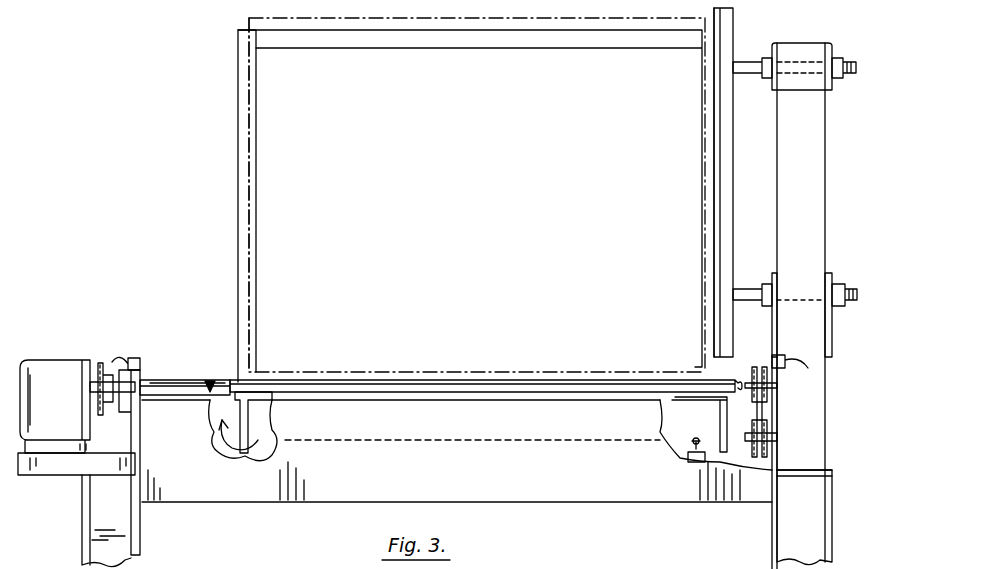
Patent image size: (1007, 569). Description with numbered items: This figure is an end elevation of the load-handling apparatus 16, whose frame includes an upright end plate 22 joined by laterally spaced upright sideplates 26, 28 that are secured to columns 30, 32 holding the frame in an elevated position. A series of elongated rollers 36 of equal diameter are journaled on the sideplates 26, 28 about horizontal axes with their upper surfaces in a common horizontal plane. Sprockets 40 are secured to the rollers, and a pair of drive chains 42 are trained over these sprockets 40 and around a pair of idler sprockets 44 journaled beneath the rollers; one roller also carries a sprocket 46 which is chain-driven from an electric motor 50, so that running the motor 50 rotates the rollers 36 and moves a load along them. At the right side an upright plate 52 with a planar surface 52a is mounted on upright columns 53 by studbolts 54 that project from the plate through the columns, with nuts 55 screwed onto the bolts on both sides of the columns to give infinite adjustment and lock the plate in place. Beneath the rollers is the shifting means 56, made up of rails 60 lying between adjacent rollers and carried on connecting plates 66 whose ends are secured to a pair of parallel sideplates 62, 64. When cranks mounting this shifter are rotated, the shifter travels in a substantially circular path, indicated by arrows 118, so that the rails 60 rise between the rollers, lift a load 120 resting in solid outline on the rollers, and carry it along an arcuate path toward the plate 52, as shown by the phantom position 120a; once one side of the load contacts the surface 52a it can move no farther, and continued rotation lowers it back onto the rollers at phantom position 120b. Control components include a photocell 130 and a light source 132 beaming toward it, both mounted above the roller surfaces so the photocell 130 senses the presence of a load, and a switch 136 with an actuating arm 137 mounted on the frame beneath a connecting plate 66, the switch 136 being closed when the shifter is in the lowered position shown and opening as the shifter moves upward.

The load-handling apparatus 16 is at (100, 278).
The upright end plate 22 is at (333, 492).
The upright sideplate 26 is at (772, 512).
The upright sideplate 28 is at (140, 527).
The column 30 is at (97, 512).
The column 32 is at (790, 540).
The roller 36 is at (218, 386).
The sprocket 40 is at (767, 385).
The drive chain 42 is at (767, 408).
The idler sprocket 44 is at (767, 450).
The sprocket 46 is at (100, 363).
The electric motor 50 is at (48, 360).
The upright plate 52 is at (733, 15).
The planar surface 52a is at (714, 80).
The upright column 53 is at (826, 200).
The studbolt 54 is at (748, 73).
The nut 55 is at (830, 75).
The shifting means 56 is at (302, 372).
The rail 60 is at (368, 382).
The sideplate 62 is at (228, 420).
The sideplate 64 is at (722, 404).
The connecting plate 66 is at (270, 425).
The arrow 118 is at (230, 448).
The load 120 is at (238, 93).
The load in phantom outline 120a is at (242, 22).
The load in phantom outline 120b is at (256, 116).
The photocell 130 is at (134, 358).
The light source 132 is at (780, 355).
The switch 136 is at (694, 462).
The actuating arm 137 is at (688, 448).